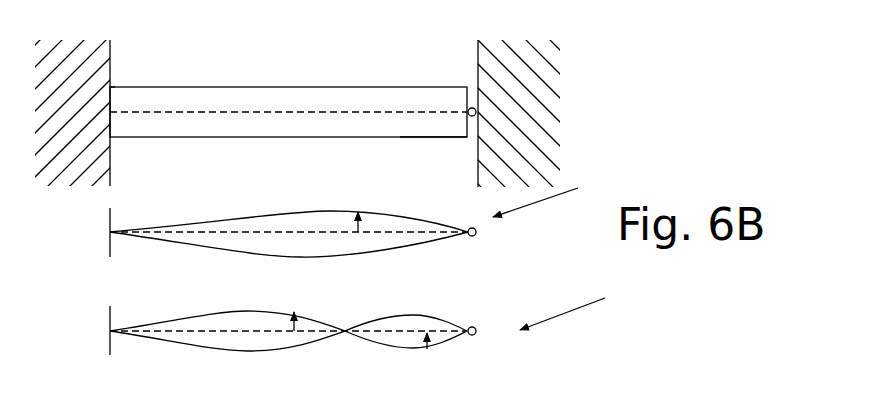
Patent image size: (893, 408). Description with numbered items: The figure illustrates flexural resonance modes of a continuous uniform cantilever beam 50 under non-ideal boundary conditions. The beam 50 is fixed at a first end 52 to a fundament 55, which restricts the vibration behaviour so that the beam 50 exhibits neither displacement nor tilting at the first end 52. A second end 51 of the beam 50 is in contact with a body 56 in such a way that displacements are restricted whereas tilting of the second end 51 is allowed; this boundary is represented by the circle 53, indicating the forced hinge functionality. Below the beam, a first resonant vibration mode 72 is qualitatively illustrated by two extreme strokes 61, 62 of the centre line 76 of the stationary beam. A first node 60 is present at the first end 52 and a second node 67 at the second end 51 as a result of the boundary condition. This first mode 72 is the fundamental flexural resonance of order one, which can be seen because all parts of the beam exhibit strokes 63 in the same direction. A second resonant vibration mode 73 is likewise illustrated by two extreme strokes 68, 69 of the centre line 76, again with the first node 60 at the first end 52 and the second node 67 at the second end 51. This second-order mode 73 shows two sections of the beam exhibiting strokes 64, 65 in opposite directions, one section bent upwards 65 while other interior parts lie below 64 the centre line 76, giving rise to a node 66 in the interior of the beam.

The cantilever beam 50 is at (320, 98).
The second end 51 is at (460, 128).
The first end 52 is at (110, 90).
The circle 53 is at (470, 112).
The fundament 55 is at (97, 143).
The body 56 is at (545, 116).
The first node 60 is at (112, 232).
The extreme stroke 61 is at (293, 213).
The extreme stroke 62 is at (293, 243).
The strokes 63 is at (374, 225).
The stroke 64 is at (299, 308).
The stroke 65 is at (442, 352).
The node 66 is at (345, 333).
The second node 67 is at (468, 238).
The extreme stroke 68 is at (245, 311).
The extreme stroke 69 is at (238, 352).
The first resonant vibration mode 72 is at (550, 191).
The second resonant vibration mode 73 is at (577, 303).
The centre line 76 is at (303, 112).